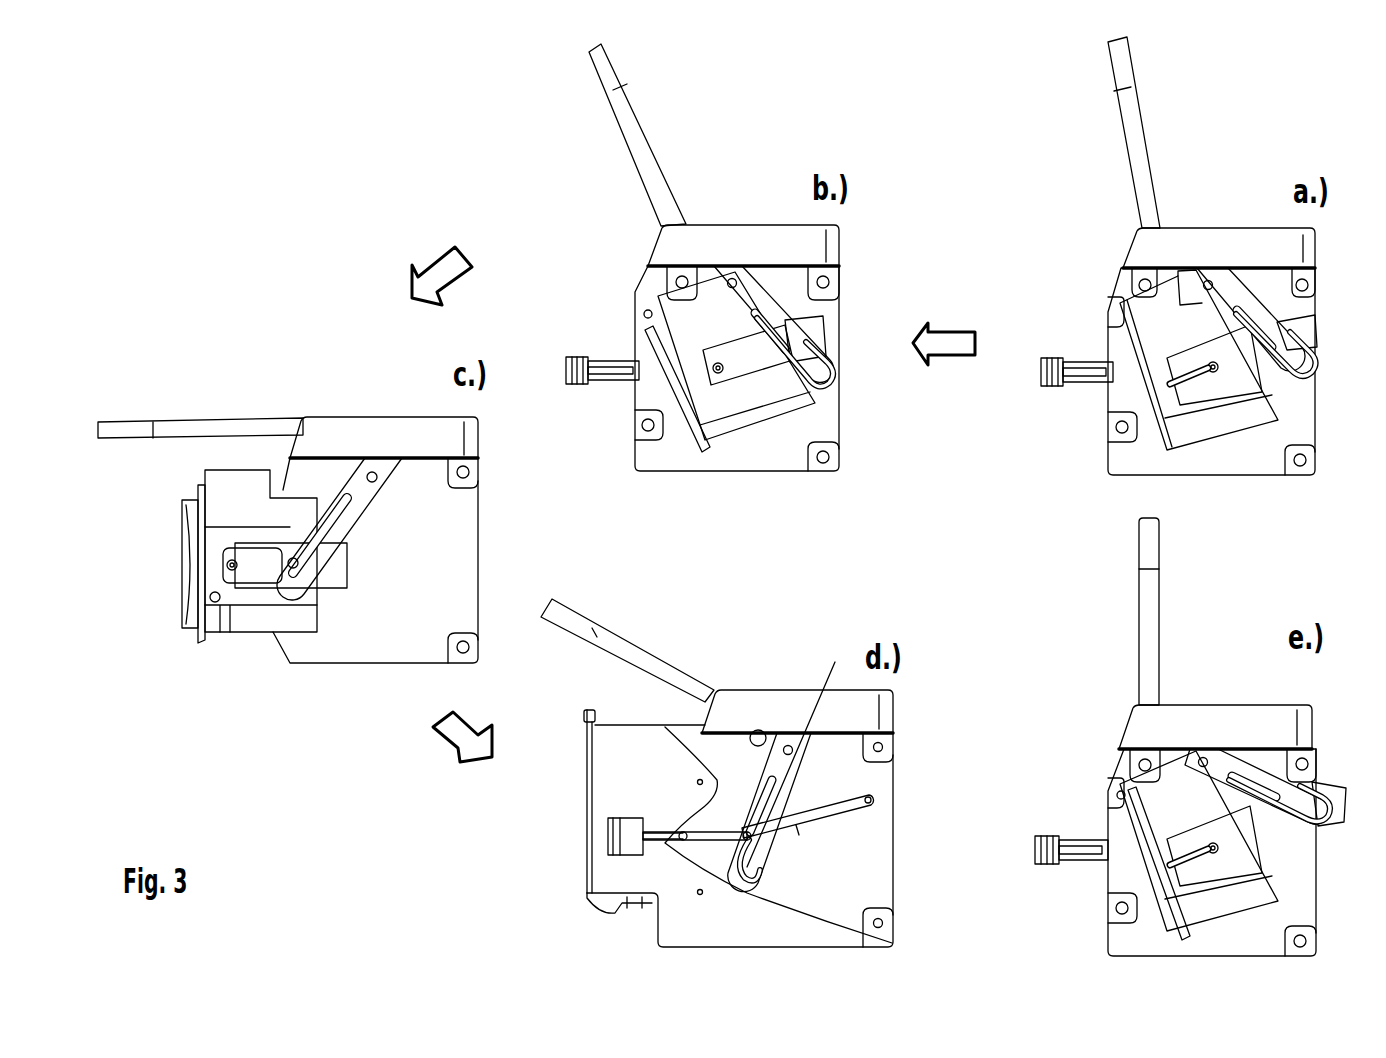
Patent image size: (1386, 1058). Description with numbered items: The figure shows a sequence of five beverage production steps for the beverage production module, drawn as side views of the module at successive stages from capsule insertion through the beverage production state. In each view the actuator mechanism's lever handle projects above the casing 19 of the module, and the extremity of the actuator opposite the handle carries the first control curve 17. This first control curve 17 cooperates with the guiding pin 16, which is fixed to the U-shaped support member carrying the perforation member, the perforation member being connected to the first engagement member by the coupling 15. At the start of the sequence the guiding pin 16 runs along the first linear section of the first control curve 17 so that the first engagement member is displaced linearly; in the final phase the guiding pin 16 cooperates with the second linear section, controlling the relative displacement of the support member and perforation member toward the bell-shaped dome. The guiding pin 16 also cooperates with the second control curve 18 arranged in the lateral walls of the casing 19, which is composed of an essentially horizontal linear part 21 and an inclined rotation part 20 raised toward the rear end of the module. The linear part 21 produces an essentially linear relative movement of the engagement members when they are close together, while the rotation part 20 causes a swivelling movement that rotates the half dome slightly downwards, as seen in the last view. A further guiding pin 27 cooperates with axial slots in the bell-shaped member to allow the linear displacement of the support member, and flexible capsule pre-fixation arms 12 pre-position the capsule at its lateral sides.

The capsule pre-fixation arms 12 is at (1054, 387).
The coupling of first engagement member and perforation member 15 is at (1327, 341).
The guiding pin 16 is at (1316, 316).
The first control curve 17 is at (1316, 378).
The second control curve 18 is at (820, 828).
The casing 19 is at (895, 772).
The rotation part of second control curve 20 is at (872, 803).
The linear part of second control curve 21 is at (725, 832).
The guiding pin 27 is at (683, 834).